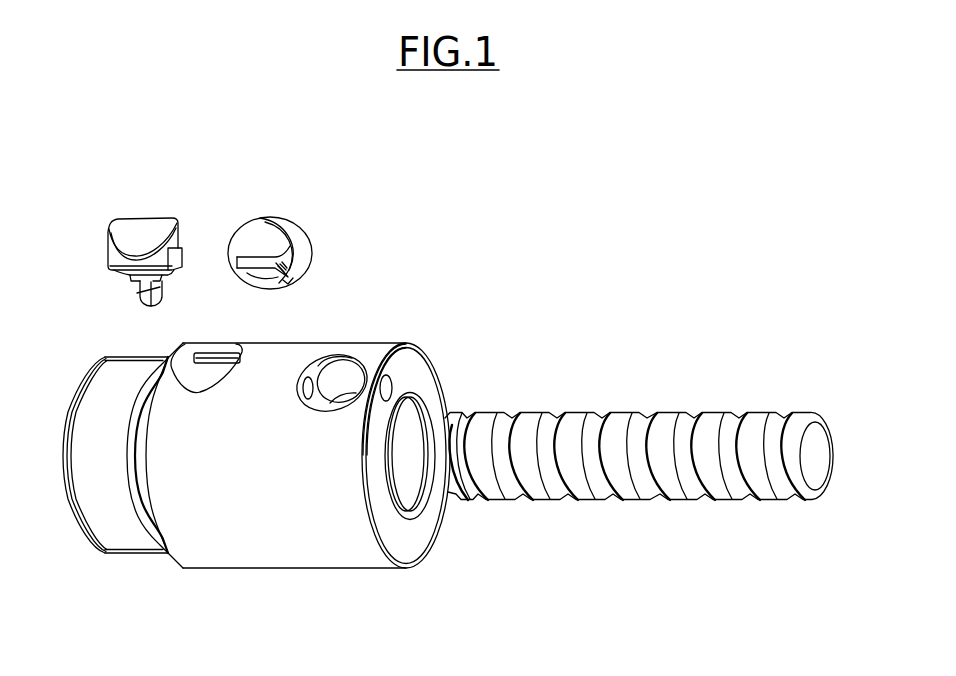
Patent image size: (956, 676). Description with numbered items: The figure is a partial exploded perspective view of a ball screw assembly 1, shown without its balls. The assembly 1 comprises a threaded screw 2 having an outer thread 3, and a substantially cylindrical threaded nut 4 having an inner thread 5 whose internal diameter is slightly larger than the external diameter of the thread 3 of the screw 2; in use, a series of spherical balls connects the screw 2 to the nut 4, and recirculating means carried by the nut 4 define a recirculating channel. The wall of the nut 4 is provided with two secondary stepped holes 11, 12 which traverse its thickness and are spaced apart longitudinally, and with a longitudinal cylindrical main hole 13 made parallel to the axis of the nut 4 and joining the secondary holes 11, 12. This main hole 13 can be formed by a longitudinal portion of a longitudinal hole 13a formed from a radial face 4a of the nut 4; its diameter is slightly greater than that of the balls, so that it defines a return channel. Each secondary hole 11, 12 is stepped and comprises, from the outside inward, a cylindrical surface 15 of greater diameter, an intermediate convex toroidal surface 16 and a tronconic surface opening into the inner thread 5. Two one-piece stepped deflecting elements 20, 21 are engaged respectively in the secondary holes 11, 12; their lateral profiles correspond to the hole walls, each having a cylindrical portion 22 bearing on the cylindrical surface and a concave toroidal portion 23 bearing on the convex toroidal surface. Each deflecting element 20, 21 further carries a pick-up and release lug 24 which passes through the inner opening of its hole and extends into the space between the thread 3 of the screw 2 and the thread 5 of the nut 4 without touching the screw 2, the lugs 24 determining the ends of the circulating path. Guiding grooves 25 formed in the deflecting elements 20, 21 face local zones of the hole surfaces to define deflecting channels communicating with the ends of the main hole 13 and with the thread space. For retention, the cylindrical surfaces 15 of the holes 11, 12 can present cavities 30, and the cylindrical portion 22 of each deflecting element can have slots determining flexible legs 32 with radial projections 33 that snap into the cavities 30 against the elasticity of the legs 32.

The ball screw assembly 1 is at (437, 294).
The threaded screw 2 is at (627, 410).
The outer thread 3 is at (551, 411).
The threaded nut 4 is at (236, 568).
The radial face 4a is at (436, 398).
The inner thread 5 is at (400, 491).
The secondary stepped hole 11 is at (193, 378).
The secondary stepped hole 12 is at (348, 378).
The longitudinal cylindrical main hole 13 is at (318, 383).
The longitudinal hole 13a is at (390, 386).
The cylindrical surface 15 is at (328, 360).
The intermediate convex toroidal surface 16 is at (353, 362).
The deflecting element 20 is at (128, 224).
The deflecting element 21 is at (273, 224).
The cylindrical portion 22 is at (117, 260).
The concave toroidal portion 23 is at (130, 278).
The pick-up and release lug 24 is at (147, 293).
The guiding groove 25 is at (176, 258).
The cavity 30 is at (229, 354).
The flexible leg 32 is at (273, 278).
The radial projection 33 is at (270, 251).